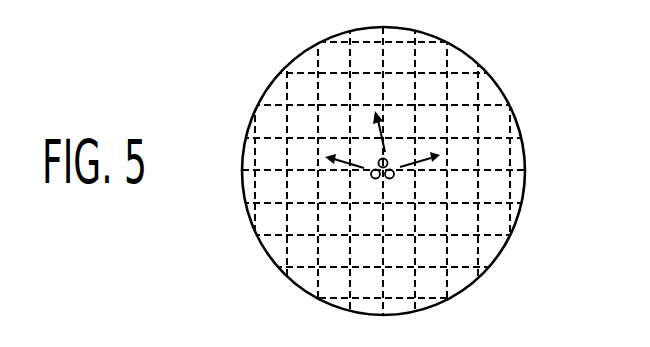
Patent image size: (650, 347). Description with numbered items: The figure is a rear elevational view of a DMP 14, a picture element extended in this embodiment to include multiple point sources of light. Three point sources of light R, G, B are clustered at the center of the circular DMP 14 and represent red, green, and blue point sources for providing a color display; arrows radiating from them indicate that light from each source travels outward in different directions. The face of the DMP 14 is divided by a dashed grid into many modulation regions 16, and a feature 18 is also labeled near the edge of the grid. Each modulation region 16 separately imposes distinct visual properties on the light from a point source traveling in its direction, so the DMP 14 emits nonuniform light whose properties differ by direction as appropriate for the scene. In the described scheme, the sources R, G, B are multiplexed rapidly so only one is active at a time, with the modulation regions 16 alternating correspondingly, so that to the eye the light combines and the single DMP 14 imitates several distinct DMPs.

The DMP 14 is at (533, 171).
The modulation region 16 is at (303, 61).
The grid line / pixel region 18 is at (481, 273).
The red point source of light R is at (389, 160).
The green point source of light G is at (372, 177).
The blue point source of light B is at (393, 177).